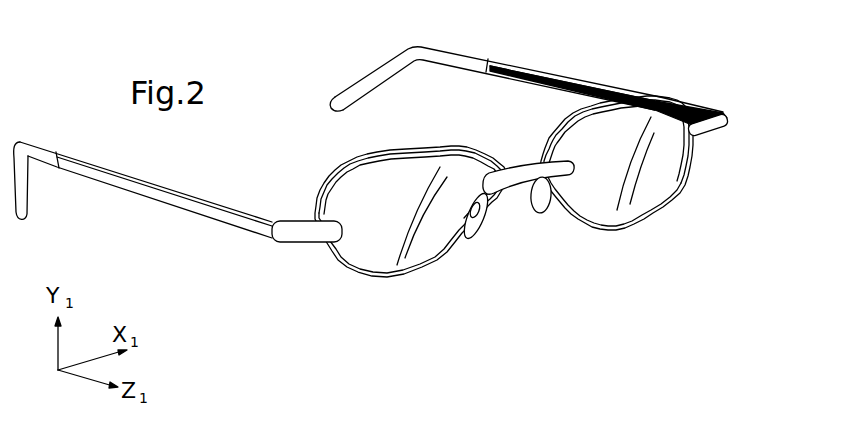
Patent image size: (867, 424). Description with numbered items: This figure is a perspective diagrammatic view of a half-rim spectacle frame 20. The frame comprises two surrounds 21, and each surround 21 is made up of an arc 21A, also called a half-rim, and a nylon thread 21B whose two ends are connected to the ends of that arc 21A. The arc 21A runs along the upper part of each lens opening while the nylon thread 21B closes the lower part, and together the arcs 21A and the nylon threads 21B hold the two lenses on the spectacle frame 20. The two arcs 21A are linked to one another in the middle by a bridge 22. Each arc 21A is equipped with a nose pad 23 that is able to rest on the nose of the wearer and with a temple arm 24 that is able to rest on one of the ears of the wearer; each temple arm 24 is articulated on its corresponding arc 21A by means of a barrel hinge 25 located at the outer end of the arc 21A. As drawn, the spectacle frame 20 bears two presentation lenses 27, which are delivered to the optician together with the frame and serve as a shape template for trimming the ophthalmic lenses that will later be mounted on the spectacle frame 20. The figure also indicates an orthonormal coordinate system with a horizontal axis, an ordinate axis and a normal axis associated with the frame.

The half-rim spectacle frame 20 is at (262, 285).
The surround 21 is at (350, 162).
The arc 21A is at (395, 157).
The nylon thread 21B is at (323, 248).
The bridge 22 is at (543, 162).
The nose pad 23 is at (466, 222).
The temple arm 24 is at (213, 203).
The barrel hinge 25 is at (288, 221).
The presentation lens 27 is at (434, 248).